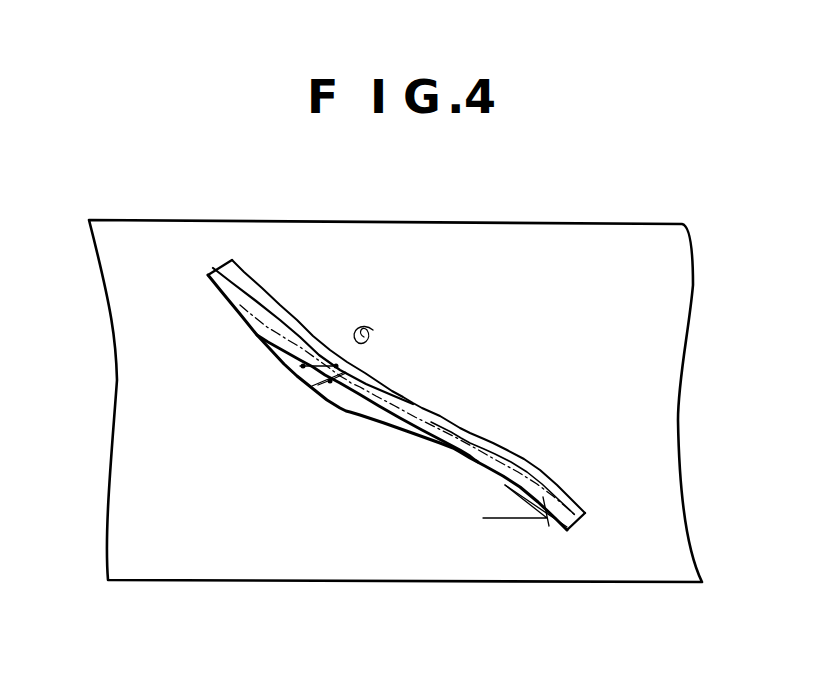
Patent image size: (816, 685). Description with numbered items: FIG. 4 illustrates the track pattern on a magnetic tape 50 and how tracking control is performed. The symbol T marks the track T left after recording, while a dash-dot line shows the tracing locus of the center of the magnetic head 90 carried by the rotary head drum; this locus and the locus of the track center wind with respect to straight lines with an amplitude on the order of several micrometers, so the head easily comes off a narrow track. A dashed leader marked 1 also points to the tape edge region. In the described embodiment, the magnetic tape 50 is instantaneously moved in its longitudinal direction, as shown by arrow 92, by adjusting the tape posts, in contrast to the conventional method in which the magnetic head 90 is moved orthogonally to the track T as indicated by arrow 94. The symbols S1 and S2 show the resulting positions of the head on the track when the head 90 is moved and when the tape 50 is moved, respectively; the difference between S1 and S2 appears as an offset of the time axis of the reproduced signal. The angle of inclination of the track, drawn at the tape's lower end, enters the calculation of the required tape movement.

The magnetic tape 50 is at (534, 225).
The track T is at (220, 272).
The guide strip under tape 1 is at (267, 347).
The position of the head on the track when the head is moved S1 is at (302, 367).
The arrow 92 is at (320, 374).
The position of the head on the track when the tape is moved S2 is at (332, 381).
The arrow 94 is at (339, 386).
The magnetic head 90 is at (356, 357).